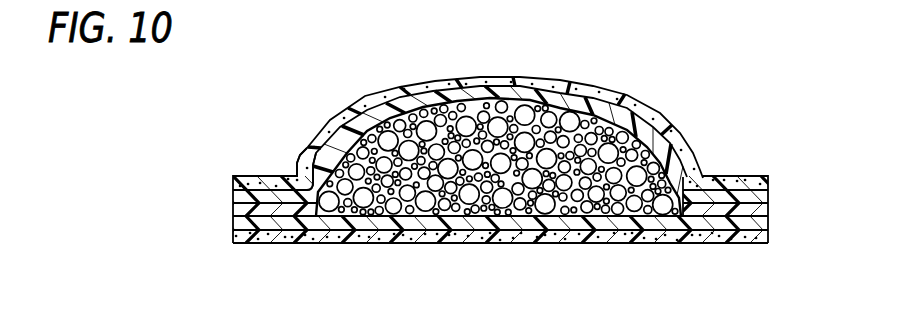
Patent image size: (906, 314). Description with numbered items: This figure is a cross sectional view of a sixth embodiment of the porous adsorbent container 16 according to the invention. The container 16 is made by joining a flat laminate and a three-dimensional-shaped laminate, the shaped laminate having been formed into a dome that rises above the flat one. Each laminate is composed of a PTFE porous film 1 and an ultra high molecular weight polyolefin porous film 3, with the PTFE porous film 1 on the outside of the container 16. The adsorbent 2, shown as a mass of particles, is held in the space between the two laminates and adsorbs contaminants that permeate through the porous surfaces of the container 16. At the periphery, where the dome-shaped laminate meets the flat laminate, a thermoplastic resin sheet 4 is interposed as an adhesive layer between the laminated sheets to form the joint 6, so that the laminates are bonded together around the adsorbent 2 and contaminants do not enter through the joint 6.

The PTFE porous film 1 is at (638, 104).
The adsorbent 2 is at (413, 205).
The ultra high molecular weight polyolefin porous film 3 is at (692, 171).
The thermoplastic resin sheet 4 is at (233, 209).
The joint 6 is at (297, 178).
The porous container 16 is at (478, 64).